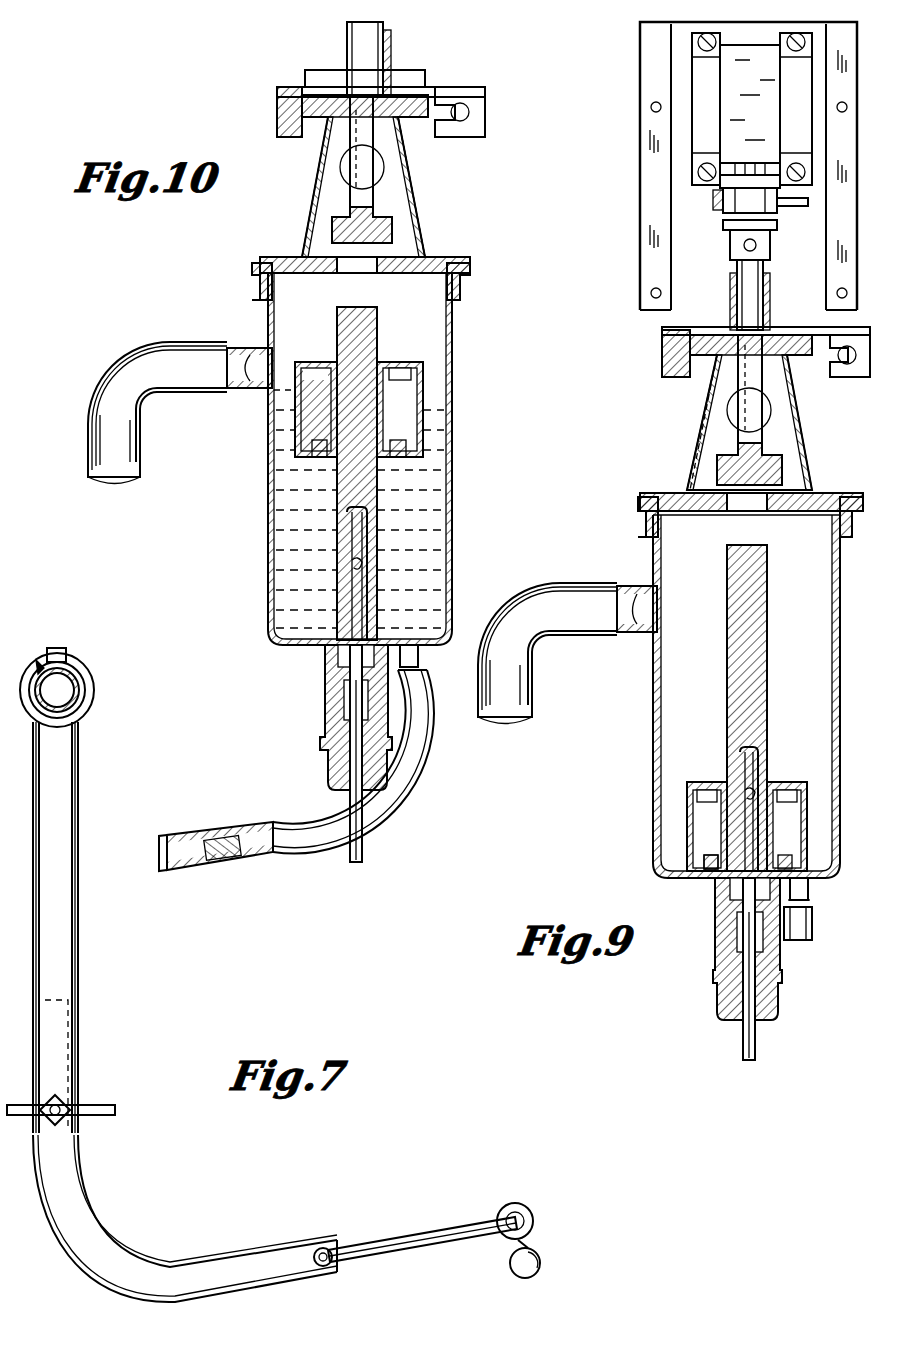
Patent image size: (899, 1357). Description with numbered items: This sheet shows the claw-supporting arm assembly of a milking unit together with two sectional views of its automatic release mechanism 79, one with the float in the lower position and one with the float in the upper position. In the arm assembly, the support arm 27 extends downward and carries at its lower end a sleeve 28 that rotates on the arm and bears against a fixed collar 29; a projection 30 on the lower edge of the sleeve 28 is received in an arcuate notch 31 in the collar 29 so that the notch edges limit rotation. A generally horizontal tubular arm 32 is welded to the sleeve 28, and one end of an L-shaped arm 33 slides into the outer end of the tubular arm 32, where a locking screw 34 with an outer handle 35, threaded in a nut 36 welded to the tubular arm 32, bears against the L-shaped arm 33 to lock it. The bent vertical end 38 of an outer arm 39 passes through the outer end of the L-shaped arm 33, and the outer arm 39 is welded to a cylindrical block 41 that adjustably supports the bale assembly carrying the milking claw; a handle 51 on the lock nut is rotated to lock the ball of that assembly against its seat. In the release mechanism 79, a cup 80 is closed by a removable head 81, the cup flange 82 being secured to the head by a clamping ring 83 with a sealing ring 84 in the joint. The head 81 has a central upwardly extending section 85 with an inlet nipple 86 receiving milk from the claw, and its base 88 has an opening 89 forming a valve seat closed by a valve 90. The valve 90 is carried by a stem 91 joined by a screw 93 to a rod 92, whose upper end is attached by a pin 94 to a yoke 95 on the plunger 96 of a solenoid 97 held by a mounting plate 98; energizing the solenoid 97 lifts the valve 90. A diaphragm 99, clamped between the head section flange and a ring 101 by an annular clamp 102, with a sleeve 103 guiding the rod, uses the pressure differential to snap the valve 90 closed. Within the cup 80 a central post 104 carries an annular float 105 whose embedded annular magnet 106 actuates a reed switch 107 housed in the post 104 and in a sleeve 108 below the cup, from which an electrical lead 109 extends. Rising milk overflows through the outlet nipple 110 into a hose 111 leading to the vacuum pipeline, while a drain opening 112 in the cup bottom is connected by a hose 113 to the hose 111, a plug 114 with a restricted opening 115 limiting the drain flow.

In FIG. 7, the support arm 27 is at (74, 686).
In FIG. 7, the sleeve 28 is at (85, 700).
In FIG. 7, the fixed collar 29 is at (80, 662).
In FIG. 7, the projection 30 is at (62, 648).
In FIG. 7, the arcuate notch 31 is at (44, 658).
In FIG. 7, the tubular arm 32 is at (80, 790).
In FIG. 7, the L-shaped arm 33 is at (150, 1265).
In FIG. 7, the locking screw 34 is at (62, 1112).
In FIG. 7, the outer handle 35 is at (116, 1112).
In FIG. 7, the nut 36 is at (62, 1103).
In FIG. 7, the bent vertical end 38 is at (330, 1250).
In FIG. 7, the outer arm 39 is at (448, 1232).
In FIG. 7, the cylindrical block 41 is at (530, 1208).
In FIG. 7, the handle 51 is at (540, 1258).
In FIG. 10, the automatic release mechanism 79 is at (455, 368).
In FIG. 9, the automatic release mechanism 79 is at (652, 727).
In FIG. 10, the cup 80 is at (452, 536).
In FIG. 9, the cup 80 is at (653, 760).
In FIG. 10, the removable head 81 is at (290, 256).
In FIG. 9, the removable head 81 is at (818, 492).
In FIG. 10, the flange 82 is at (470, 288).
In FIG. 9, the flange 82 is at (851, 517).
In FIG. 10, the clamping ring 83 is at (256, 265).
In FIG. 9, the clamping ring 83 is at (643, 498).
In FIG. 10, the sealing ring 84 is at (255, 280).
In FIG. 9, the sealing ring 84 is at (640, 518).
In FIG. 10, the central upwardly extending section 85 is at (310, 190).
In FIG. 9, the central upwardly extending section 85 is at (749, 412).
In FIG. 10, the inlet nipple 86 is at (378, 172).
In FIG. 9, the inlet nipple 86 is at (728, 405).
In FIG. 10, the base 88 is at (305, 275).
In FIG. 9, the base 88 is at (705, 514).
In FIG. 10, the opening 89 is at (350, 274).
In FIG. 9, the opening 89 is at (760, 513).
In FIG. 10, the valve 90 is at (392, 222).
In FIG. 9, the valve 90 is at (722, 470).
In FIG. 10, the stem 91 is at (355, 188).
In FIG. 9, the stem 91 is at (745, 422).
In FIG. 10, the rod 92 is at (370, 26).
In FIG. 9, the rod 92 is at (760, 270).
In FIG. 10, the screw 93 is at (412, 156).
In FIG. 9, the screw 93 is at (720, 385).
In FIG. 9, the pin 94 is at (800, 207).
In FIG. 9, the yoke 95 is at (712, 198).
In FIG. 9, the plunger 96 is at (755, 168).
In FIG. 9, the solenoid 97 is at (730, 80).
In FIG. 9, the mounting plate 98 is at (690, 112).
In FIG. 10, the diaphragm 99 is at (400, 90).
In FIG. 9, the diaphragm 99 is at (782, 327).
In FIG. 10, the ring 101 is at (332, 95).
In FIG. 9, the ring 101 is at (712, 327).
In FIG. 10, the annular clamp 102 is at (478, 90).
In FIG. 9, the annular clamp 102 is at (855, 378).
In FIG. 10, the sleeve 103 is at (392, 45).
In FIG. 9, the sleeve 103 is at (730, 280).
In FIG. 10, the post 104 is at (377, 468).
In FIG. 9, the post 104 is at (727, 614).
In FIG. 10, the annular float 105 is at (400, 362).
In FIG. 9, the annular float 105 is at (705, 782).
In FIG. 10, the annular magnet 106 is at (312, 448).
In FIG. 9, the annular magnet 106 is at (705, 858).
In FIG. 10, the reed switch 107 is at (367, 582).
In FIG. 9, the reed switch 107 is at (758, 770).
In FIG. 10, the sleeve 108 is at (326, 665).
In FIG. 9, the sleeve 108 is at (715, 950).
In FIG. 10, the electrical lead 109 is at (363, 848).
In FIG. 9, the electrical lead 109 is at (743, 1048).
In FIG. 10, the outlet nipple 110 is at (252, 392).
In FIG. 9, the outlet nipple 110 is at (640, 586).
In FIG. 10, the hose 111 is at (210, 342).
In FIG. 9, the hose 111 is at (573, 637).
In FIG. 10, the drain opening 112 is at (412, 645).
In FIG. 9, the drain opening 112 is at (808, 890).
In FIG. 10, the hose 113 is at (410, 735).
In FIG. 9, the hose 113 is at (802, 942).
In FIG. 10, the plug 114 is at (228, 828).
In FIG. 10, the restricted opening 115 is at (237, 856).